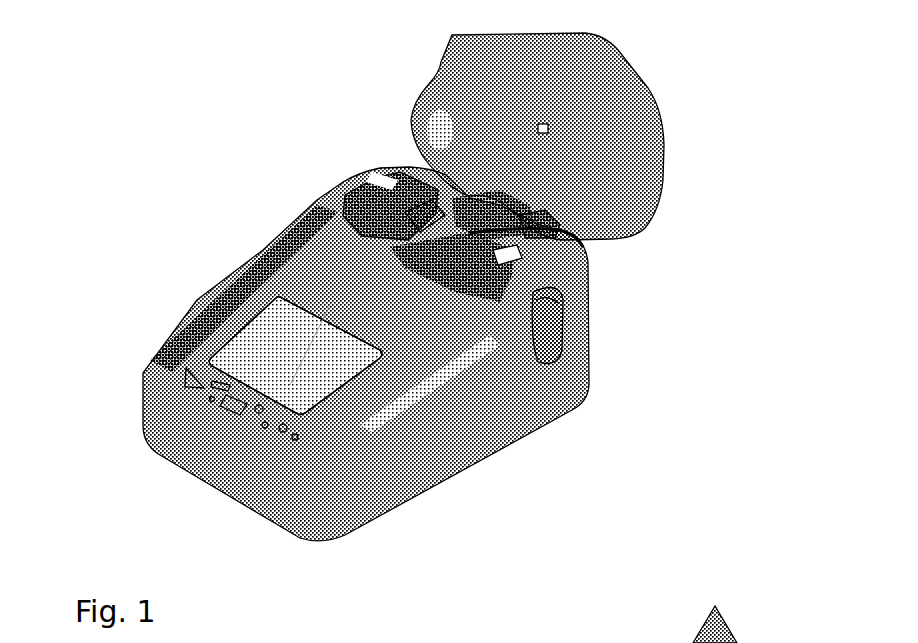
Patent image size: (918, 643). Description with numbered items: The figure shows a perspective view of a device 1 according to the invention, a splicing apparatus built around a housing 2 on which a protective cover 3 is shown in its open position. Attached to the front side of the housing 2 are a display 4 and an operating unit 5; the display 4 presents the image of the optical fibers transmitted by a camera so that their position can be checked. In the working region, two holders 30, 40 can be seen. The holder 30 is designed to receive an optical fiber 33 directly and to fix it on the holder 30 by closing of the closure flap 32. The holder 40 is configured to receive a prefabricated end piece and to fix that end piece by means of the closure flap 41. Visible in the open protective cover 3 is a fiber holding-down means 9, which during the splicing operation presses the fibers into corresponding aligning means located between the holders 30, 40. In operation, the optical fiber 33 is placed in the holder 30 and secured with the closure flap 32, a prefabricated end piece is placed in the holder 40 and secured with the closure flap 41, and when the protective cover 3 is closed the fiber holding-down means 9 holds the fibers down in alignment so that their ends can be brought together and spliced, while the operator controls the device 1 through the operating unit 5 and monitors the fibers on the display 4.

The device 1 is at (399, 307).
The housing 2 is at (397, 307).
The protective cover 3 is at (580, 136).
The display 4 is at (330, 393).
The operating unit 5 is at (207, 402).
The fiber holding-down means 9 is at (548, 132).
The holder 30 is at (505, 283).
The closure flap 32 is at (552, 238).
The optical fiber 33 is at (558, 352).
The holder 40 is at (358, 203).
The closure flap 41 is at (420, 210).